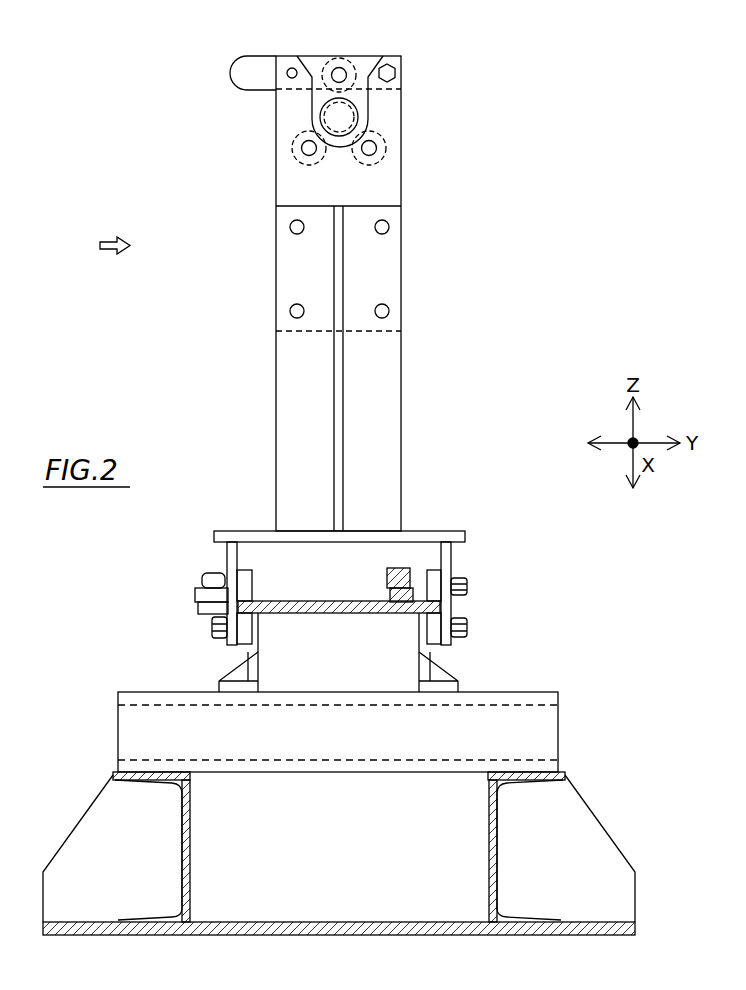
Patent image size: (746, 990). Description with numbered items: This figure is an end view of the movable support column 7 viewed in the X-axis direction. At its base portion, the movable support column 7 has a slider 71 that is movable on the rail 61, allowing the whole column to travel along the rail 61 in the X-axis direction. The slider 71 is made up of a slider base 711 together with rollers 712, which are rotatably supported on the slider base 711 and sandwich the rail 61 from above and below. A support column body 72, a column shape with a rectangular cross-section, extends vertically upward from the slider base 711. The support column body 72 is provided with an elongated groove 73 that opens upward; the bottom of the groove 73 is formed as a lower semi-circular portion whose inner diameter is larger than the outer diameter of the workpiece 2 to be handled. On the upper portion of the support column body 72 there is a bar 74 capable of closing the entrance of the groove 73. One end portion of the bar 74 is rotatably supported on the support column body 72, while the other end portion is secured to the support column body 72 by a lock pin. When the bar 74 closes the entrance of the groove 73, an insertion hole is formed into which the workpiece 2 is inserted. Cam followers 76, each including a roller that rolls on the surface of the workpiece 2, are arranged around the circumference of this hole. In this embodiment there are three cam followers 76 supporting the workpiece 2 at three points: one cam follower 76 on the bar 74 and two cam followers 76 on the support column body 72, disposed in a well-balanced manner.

The workpiece 2 is at (313, 115).
The movable support column 7 is at (107, 246).
The rail 61 is at (335, 602).
The slider 71 is at (465, 537).
The slider base 711 is at (428, 520).
The rollers 712 is at (242, 573).
The support column body 72 is at (276, 354).
The groove 73 is at (363, 100).
The bar 74 is at (232, 73).
The cam followers 76 is at (320, 59).